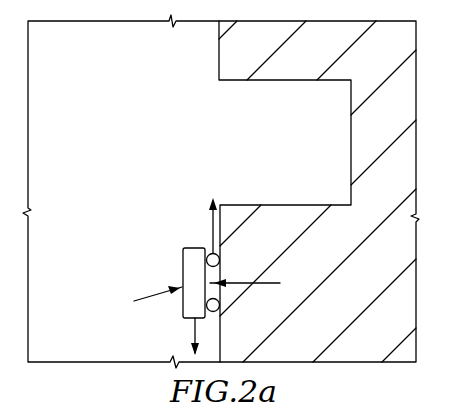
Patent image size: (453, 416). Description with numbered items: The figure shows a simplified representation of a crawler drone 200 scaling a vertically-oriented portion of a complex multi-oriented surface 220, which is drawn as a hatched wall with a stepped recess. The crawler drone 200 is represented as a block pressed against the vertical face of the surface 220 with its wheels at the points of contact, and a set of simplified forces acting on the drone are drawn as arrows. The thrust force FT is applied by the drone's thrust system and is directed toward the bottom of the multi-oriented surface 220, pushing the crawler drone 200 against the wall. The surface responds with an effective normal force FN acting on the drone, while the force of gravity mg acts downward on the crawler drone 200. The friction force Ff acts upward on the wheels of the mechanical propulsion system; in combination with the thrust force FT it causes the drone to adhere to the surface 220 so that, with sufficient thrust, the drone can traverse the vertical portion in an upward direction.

The crawler drone 200 is at (172, 241).
The multi-oriented surface 220 is at (239, 81).
The friction force Ff is at (209, 214).
The effective normal force FN is at (256, 284).
The thrust force FT is at (148, 297).
The force of gravity mg is at (177, 336).